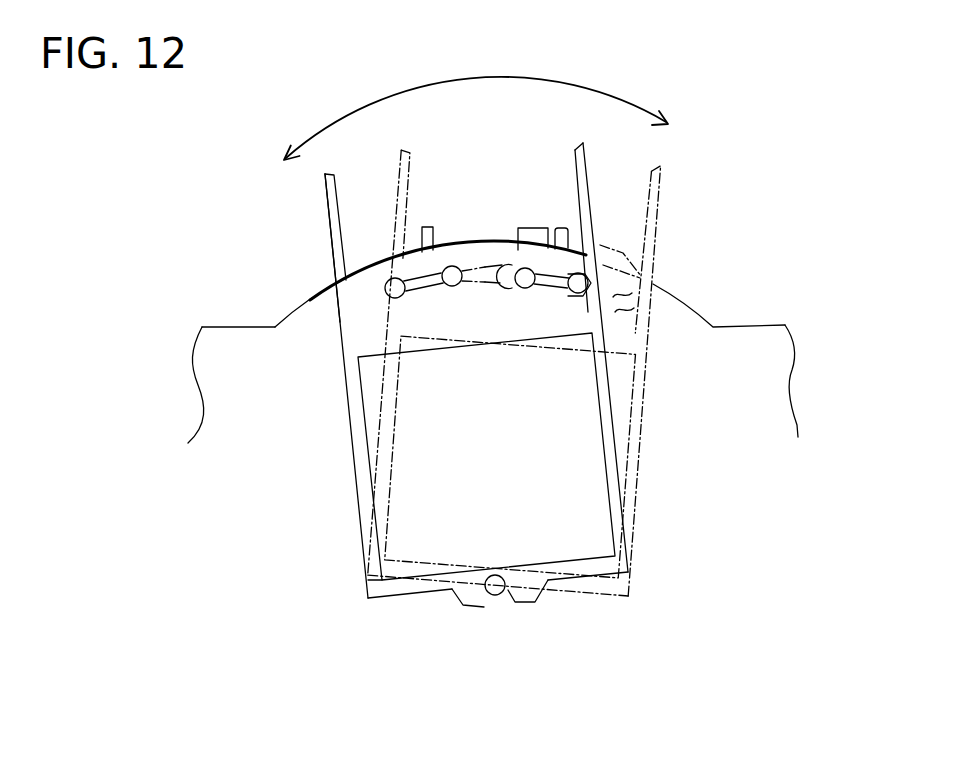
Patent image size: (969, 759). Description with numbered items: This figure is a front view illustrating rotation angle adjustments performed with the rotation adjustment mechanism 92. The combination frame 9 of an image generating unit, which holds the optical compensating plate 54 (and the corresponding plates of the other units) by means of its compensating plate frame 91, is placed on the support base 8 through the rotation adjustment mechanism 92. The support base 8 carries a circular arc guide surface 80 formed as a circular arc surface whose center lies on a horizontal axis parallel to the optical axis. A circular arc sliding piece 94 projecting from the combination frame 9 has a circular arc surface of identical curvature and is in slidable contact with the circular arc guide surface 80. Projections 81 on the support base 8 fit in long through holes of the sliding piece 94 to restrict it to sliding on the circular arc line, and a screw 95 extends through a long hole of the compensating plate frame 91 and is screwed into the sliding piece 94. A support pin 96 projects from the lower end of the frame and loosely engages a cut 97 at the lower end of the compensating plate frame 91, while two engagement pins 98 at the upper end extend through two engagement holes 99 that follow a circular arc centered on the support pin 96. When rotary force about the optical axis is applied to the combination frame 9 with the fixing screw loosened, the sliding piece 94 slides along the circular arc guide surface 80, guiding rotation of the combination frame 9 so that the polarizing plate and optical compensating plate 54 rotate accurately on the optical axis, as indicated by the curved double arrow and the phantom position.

The support base 8 is at (222, 327).
The combination frame 9 is at (663, 190).
The circular arc guide surface 80 is at (686, 292).
The projection 81 is at (427, 227).
The compensating plate frame 91 is at (363, 447).
The rotation adjustment mechanism 92 is at (690, 228).
The circular arc sliding piece 94 is at (366, 263).
The screw 95 is at (530, 227).
The support pin 96 is at (497, 594).
The cut 97 is at (487, 602).
The engagement pin 98 is at (388, 293).
The engagement hole 99 is at (437, 277).
The optical compensating plate 54 is at (592, 493).